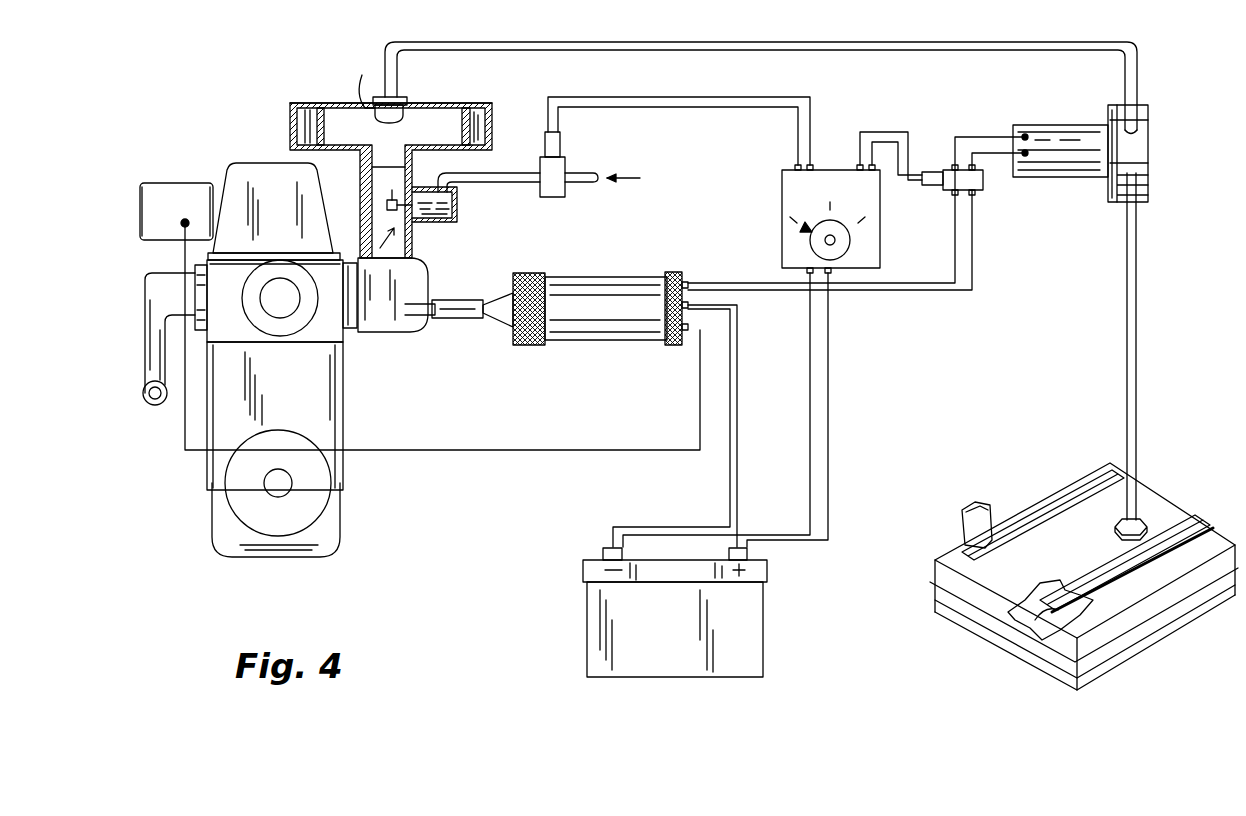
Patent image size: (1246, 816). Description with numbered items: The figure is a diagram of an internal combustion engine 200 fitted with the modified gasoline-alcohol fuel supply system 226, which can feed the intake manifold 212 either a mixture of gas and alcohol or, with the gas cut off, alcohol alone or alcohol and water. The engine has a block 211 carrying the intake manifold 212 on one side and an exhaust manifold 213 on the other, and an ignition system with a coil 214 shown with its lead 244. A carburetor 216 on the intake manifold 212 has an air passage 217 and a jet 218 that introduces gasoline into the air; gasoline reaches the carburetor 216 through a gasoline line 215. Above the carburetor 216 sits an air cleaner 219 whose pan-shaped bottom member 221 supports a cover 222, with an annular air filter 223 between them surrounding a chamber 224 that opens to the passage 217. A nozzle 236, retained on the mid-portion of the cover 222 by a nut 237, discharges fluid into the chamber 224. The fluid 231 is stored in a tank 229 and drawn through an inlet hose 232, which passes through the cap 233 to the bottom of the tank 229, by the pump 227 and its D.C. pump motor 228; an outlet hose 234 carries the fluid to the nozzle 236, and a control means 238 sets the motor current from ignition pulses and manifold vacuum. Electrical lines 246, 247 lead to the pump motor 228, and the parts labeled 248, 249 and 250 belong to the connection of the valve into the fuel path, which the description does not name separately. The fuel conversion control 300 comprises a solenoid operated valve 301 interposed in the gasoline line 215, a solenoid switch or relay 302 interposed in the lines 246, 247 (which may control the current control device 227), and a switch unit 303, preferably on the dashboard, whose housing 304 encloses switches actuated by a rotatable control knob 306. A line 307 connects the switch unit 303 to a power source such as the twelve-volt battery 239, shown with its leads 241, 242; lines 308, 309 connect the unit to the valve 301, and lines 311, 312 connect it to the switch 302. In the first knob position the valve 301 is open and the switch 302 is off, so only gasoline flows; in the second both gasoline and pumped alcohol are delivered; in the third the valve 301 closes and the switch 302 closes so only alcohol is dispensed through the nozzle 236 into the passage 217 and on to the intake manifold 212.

The engine assembly 200 is at (281, 376).
The block 211 is at (346, 408).
The intake manifold 212 is at (385, 320).
The exhaust manifold 213 is at (158, 408).
The coil 214 is at (182, 190).
The gasoline line 215 is at (505, 174).
The carburetor 216 is at (455, 222).
The passage 217 is at (372, 182).
The nozzle or jet 218 is at (387, 206).
The air cleaner 219 is at (364, 161).
The bottom member 221 is at (292, 143).
The cover 222 is at (332, 98).
The air filter 223 is at (300, 123).
The chamber 224 is at (441, 126).
The fuel supply system 226 is at (1158, 125).
The pump 227 is at (1150, 150).
The pump motor 228 is at (1065, 123).
The tank 229 is at (972, 598).
The fluid 231 is at (1035, 622).
The inlet hose 232 is at (1138, 440).
The cap 233 is at (1158, 518).
The outlet hose 234 is at (643, 42).
The nozzle 236 is at (360, 76).
The nut 237 is at (400, 98).
The control means 238 is at (603, 275).
The battery 239 is at (587, 640).
The lead 241 is at (728, 487).
The lead 242 is at (742, 487).
The wire 244 is at (485, 450).
The electrical line 246 is at (928, 284).
The electrical line 247 is at (938, 290).
The knurled cap 248 is at (505, 288).
The plunger 249 is at (455, 320).
The fitting 250 is at (410, 300).
The fuel conversion control 300 is at (796, 179).
The solenoid operated valve 301 is at (566, 195).
The solenoid switch or relay 302 is at (983, 188).
The switch unit 303 is at (782, 263).
The housing 304 is at (782, 187).
The control knob 306 is at (808, 236).
The line 307 is at (830, 345).
The line 308 is at (660, 97).
The line 309 is at (713, 107).
The line 311 is at (892, 130).
The line 312 is at (912, 148).